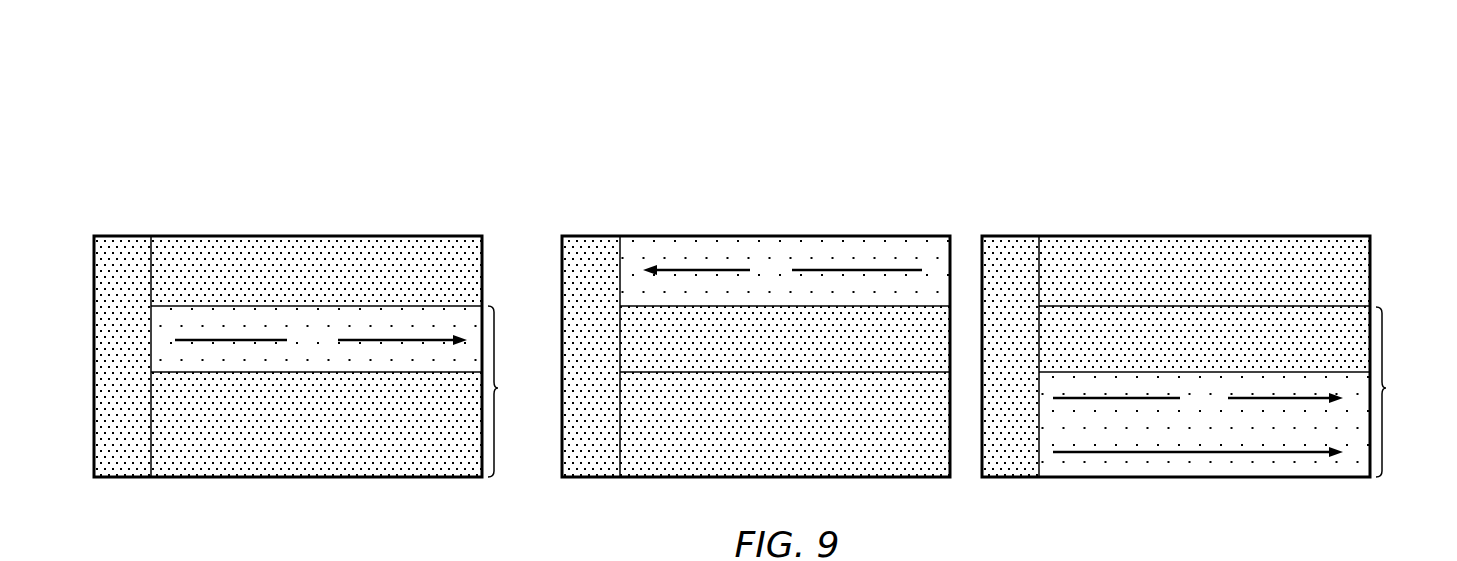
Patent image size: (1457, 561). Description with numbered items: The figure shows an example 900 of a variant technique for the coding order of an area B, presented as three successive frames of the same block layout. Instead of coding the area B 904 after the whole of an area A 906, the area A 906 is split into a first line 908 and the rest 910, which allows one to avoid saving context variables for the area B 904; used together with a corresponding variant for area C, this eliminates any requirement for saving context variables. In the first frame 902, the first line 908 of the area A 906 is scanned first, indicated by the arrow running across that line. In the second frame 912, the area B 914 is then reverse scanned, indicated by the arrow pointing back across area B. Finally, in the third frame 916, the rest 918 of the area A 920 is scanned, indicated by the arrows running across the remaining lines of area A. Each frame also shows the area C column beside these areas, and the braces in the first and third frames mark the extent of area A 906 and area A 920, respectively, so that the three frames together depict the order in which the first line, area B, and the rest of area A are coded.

The example 900 is at (652, 90).
The frame 902 is at (142, 233).
The area B 904 is at (248, 253).
The area A 906 is at (520, 391).
The first line 908 is at (399, 360).
The rest 910 is at (233, 438).
The frame 912 is at (612, 233).
The area B 914 is at (738, 245).
The frame 916 is at (1023, 233).
The rest 918 is at (1125, 428).
The area A 920 is at (1410, 392).